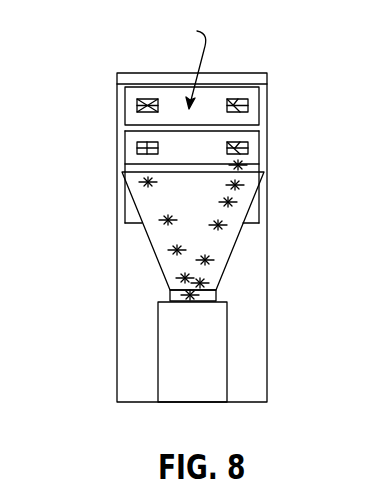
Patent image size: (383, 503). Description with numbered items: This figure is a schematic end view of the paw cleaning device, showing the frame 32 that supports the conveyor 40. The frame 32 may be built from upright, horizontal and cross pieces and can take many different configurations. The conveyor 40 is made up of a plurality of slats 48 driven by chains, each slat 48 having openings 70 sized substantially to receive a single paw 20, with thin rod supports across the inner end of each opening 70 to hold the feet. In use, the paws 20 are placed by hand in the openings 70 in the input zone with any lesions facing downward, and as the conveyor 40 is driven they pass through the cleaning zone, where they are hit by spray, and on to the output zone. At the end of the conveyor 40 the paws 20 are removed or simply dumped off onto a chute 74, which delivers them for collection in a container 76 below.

The paw 20 is at (118, 110).
The frame 32 is at (268, 295).
The conveyor 40 is at (186, 69).
The slat 48 is at (137, 120).
The opening 70 is at (135, 103).
The chute 74 is at (238, 232).
The container 76 is at (212, 340).